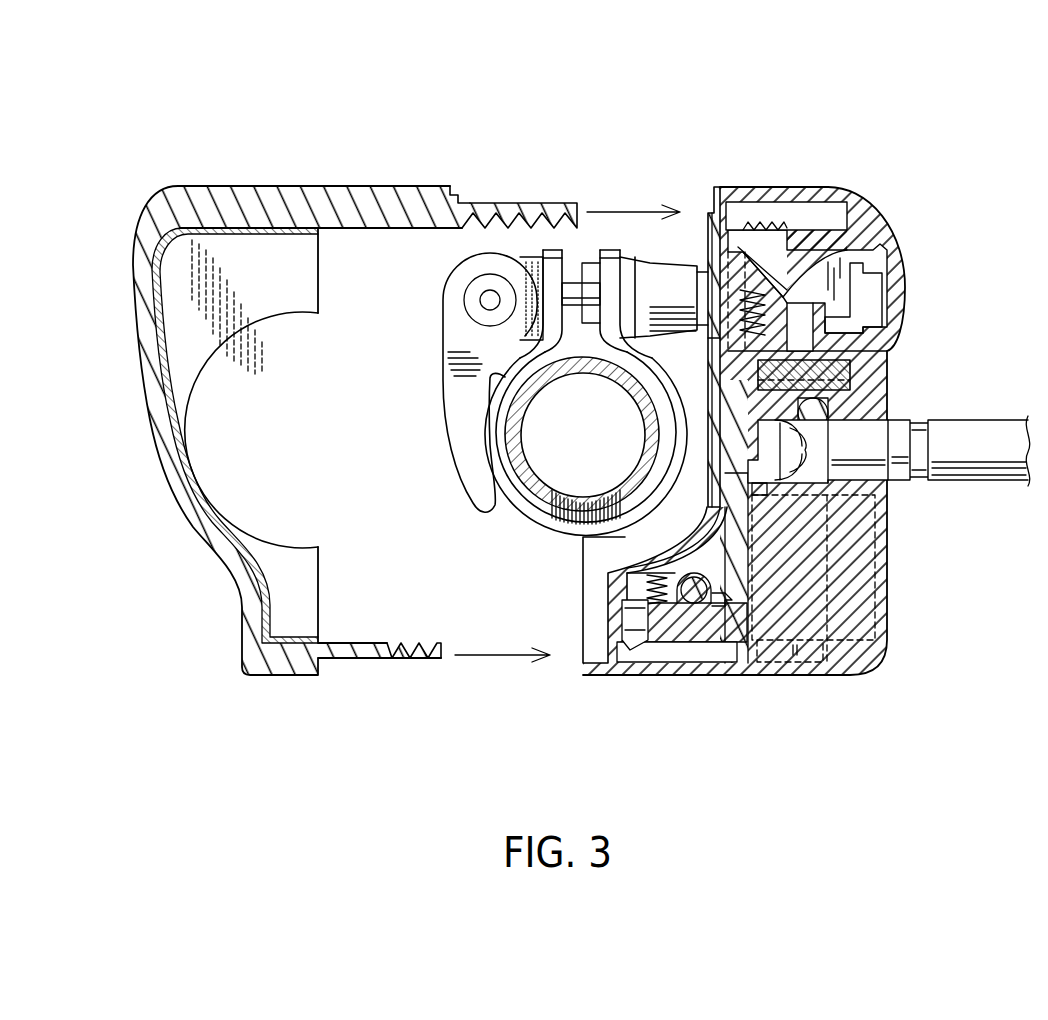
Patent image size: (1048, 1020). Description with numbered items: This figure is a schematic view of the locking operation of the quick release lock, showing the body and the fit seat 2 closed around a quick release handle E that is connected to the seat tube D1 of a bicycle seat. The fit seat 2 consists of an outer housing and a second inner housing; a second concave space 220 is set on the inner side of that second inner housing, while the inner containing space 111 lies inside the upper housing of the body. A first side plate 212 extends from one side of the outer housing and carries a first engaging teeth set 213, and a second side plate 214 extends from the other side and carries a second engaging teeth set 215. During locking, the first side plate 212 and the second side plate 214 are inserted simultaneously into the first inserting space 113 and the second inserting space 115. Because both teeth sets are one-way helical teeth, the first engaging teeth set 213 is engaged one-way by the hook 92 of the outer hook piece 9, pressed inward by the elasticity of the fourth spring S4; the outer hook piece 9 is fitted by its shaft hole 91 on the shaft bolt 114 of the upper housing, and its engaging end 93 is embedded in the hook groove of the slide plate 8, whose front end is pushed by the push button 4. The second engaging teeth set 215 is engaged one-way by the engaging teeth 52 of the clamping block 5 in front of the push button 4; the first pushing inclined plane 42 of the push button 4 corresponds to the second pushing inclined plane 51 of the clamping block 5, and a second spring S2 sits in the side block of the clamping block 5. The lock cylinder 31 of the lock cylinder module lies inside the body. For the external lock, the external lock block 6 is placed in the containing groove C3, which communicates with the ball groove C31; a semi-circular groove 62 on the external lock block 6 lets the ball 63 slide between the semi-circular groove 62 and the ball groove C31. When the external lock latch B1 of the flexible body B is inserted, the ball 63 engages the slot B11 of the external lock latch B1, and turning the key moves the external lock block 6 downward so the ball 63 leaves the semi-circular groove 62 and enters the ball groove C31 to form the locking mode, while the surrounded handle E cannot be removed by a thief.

The fit seat 2 is at (180, 182).
The second side plate 214 is at (513, 195).
The second engaging teeth set 215 is at (470, 232).
The first engaging teeth set 213 is at (400, 643).
The first side plate 212 is at (398, 660).
The second concave space 220 is at (222, 424).
The quick release handle E is at (457, 297).
The seat tube D1 is at (540, 497).
The inner containing space 111 is at (628, 523).
The fourth spring S4 is at (600, 590).
The clamping block 5 is at (710, 262).
The second pushing inclined plane 51 is at (712, 268).
The engaging teeth 52 is at (760, 237).
The second inserting space 115 is at (805, 216).
The first pushing inclined plane 42 is at (800, 287).
The push button 4 is at (898, 290).
The containing groove C3 is at (892, 335).
The external lock block 6 is at (852, 372).
The semi-circular groove 62 is at (852, 380).
The ball groove C31 is at (832, 402).
The ball 63 is at (855, 412).
The flexible body B is at (998, 430).
The slot B11 is at (855, 463).
The external lock latch B1 is at (858, 468).
The lock cylinder 31 is at (885, 580).
The second spring S2 is at (717, 338).
The hook 92 is at (643, 633).
The outer hook piece 9 is at (668, 640).
The first inserting space 113 is at (690, 653).
The shaft hole 91 is at (670, 610).
The shaft bolt 114 is at (693, 610).
The engaging end 93 is at (703, 605).
The slide plate 8 is at (752, 557).